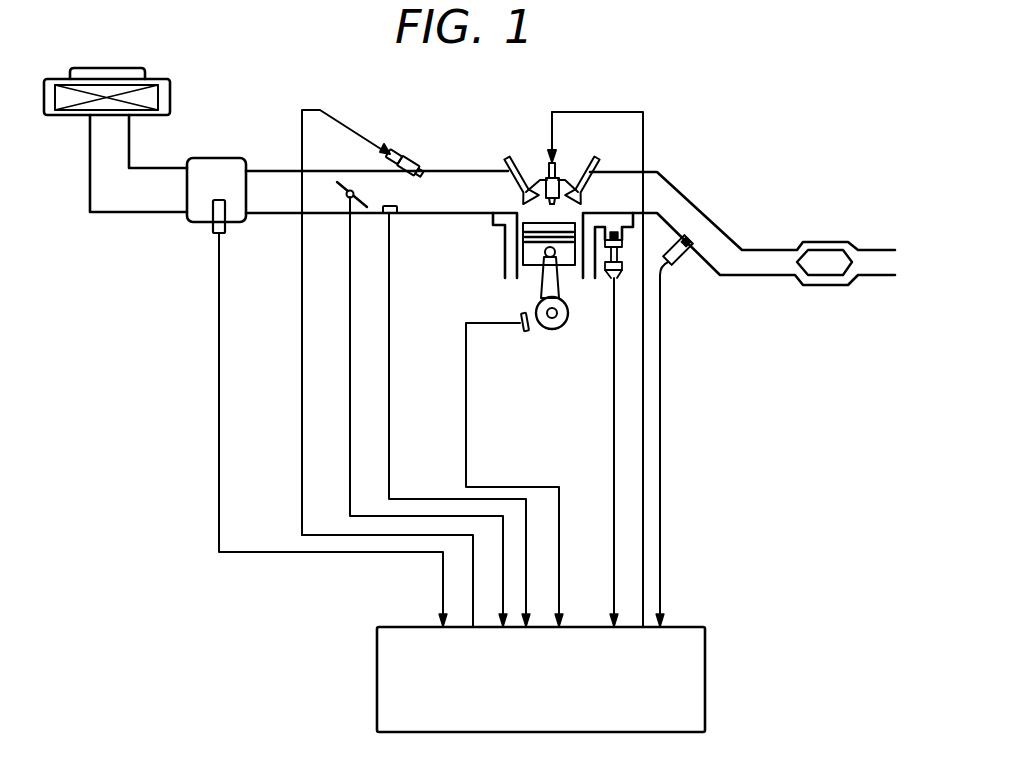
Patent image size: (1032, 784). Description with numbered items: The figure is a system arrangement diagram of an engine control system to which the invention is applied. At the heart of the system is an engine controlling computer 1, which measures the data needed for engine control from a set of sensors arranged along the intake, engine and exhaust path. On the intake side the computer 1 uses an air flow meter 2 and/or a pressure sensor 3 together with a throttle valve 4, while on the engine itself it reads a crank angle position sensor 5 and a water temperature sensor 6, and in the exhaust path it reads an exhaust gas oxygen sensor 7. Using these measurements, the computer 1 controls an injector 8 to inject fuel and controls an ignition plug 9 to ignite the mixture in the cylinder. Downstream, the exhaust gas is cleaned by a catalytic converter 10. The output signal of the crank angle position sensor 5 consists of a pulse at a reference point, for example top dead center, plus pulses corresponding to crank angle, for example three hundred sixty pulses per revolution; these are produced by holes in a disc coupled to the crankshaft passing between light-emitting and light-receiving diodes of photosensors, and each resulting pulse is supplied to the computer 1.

The engine controlling computer 1 is at (706, 652).
The air flow meter 2 is at (211, 228).
The pressure sensor 3 is at (383, 212).
The throttle valve 4 is at (345, 194).
The crank angle position sensor 5 is at (529, 338).
The water temperature sensor 6 is at (607, 270).
The exhaust gas (O2) sensor 7 is at (682, 238).
The injector 8 is at (416, 164).
The ignition plug 9 is at (560, 172).
The catalytic converter 10 is at (832, 295).